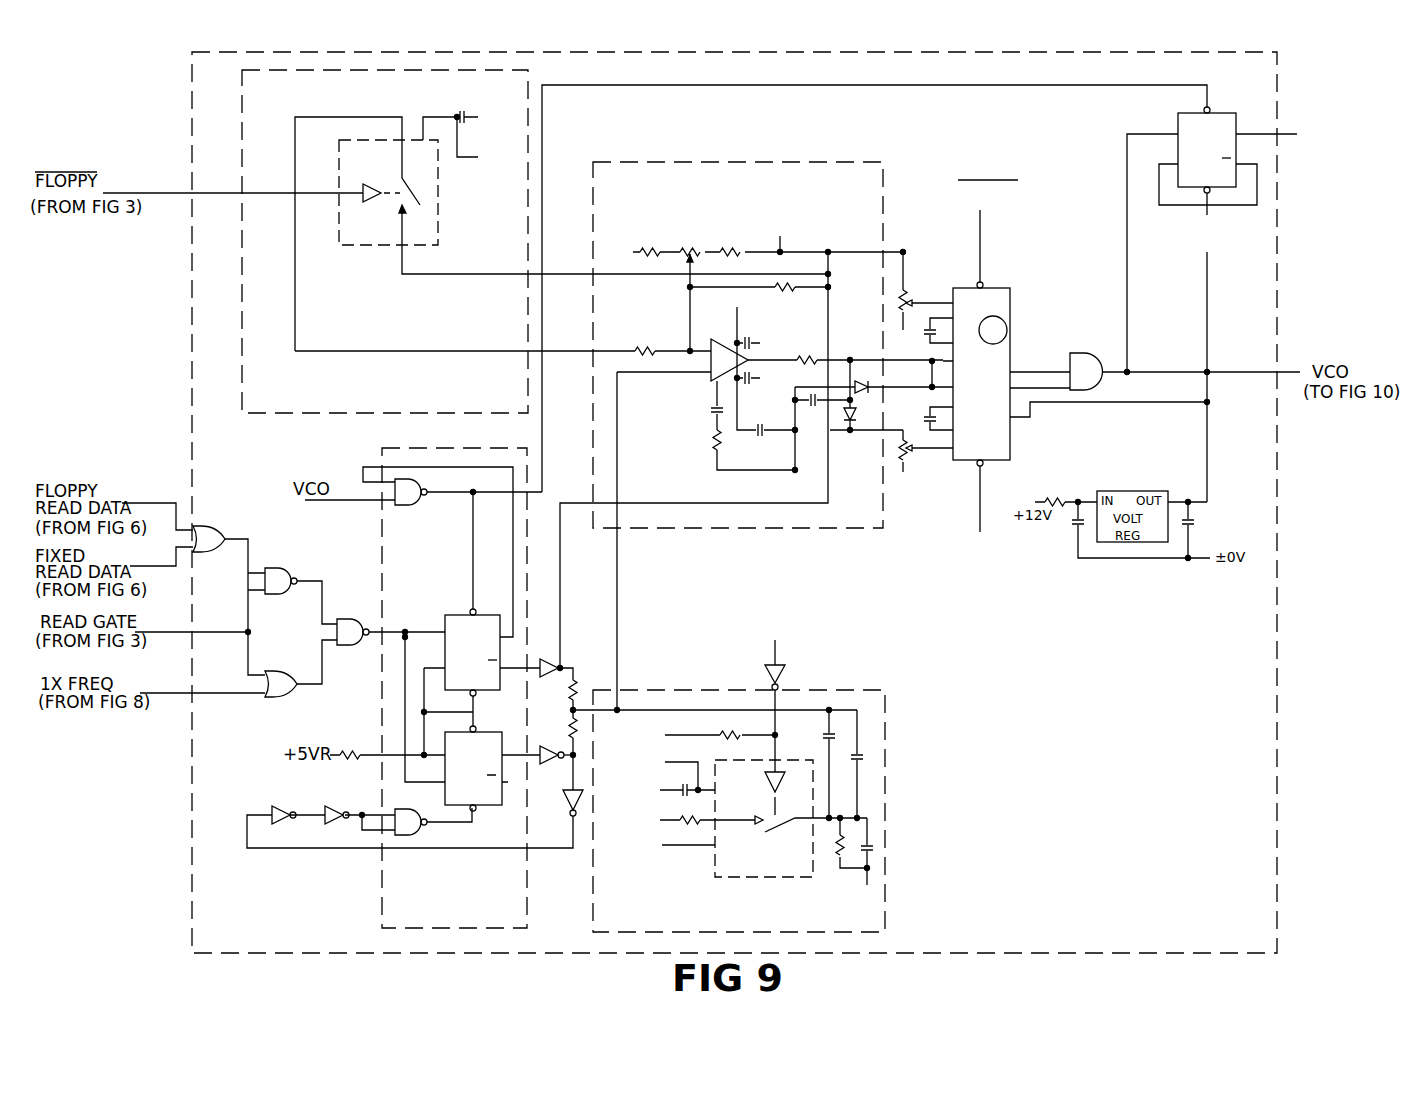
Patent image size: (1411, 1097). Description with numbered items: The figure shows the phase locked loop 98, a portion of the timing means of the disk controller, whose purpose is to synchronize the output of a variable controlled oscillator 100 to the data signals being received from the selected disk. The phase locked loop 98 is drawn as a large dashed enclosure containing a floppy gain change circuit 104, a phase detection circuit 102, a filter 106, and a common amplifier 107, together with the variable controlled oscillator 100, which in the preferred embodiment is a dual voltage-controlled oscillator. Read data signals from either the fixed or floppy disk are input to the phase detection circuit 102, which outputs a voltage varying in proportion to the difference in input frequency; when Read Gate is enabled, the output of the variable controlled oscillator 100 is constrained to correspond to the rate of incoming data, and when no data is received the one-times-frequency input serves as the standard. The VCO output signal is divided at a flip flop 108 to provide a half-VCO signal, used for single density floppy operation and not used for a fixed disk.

The phase locked loop 98 is at (1277, 851).
The variable controlled oscillator 100 is at (1010, 318).
The phase detection circuit 102 is at (382, 887).
The floppy gain change circuit 104 is at (300, 413).
The filter 106 is at (885, 895).
The common amplifier 107 is at (863, 162).
The flip flop 108 is at (1223, 112).